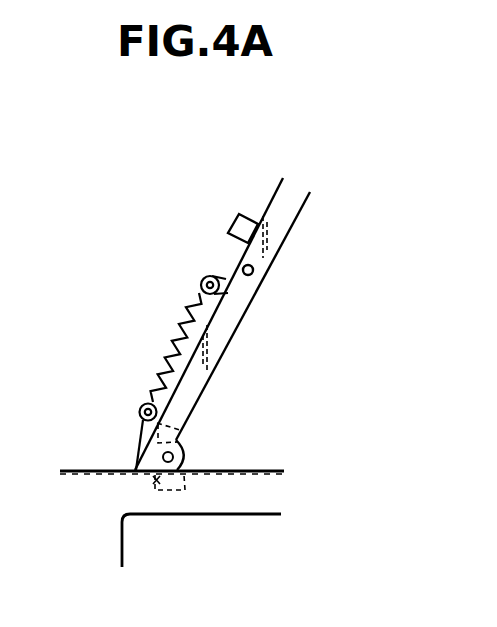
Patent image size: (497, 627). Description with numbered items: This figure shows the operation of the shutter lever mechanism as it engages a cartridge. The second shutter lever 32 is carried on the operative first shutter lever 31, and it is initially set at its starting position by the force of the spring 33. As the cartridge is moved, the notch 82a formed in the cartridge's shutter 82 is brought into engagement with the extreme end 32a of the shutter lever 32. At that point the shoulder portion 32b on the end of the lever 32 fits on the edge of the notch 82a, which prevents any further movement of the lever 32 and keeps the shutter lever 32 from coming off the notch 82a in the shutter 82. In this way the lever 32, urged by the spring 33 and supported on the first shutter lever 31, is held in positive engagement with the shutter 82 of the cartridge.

The first shutter lever 31 is at (266, 214).
The spring 33 is at (177, 333).
The second shutter lever 32 is at (140, 428).
The shoulder portion 32b is at (135, 462).
The notch 82a is at (190, 488).
The extreme end 32a is at (150, 487).
The shutter 82 is at (250, 500).